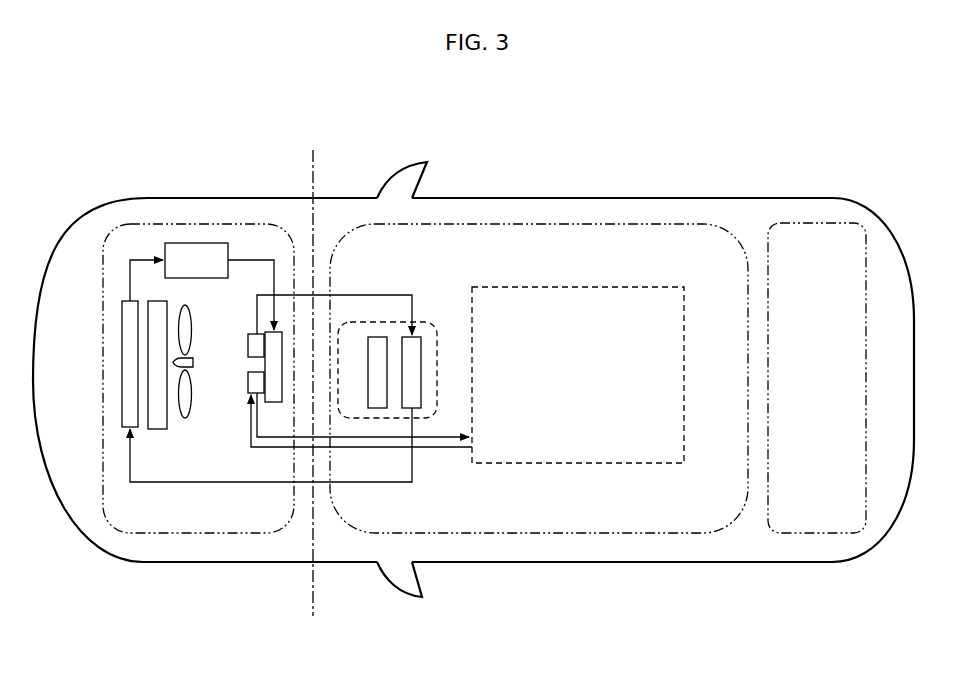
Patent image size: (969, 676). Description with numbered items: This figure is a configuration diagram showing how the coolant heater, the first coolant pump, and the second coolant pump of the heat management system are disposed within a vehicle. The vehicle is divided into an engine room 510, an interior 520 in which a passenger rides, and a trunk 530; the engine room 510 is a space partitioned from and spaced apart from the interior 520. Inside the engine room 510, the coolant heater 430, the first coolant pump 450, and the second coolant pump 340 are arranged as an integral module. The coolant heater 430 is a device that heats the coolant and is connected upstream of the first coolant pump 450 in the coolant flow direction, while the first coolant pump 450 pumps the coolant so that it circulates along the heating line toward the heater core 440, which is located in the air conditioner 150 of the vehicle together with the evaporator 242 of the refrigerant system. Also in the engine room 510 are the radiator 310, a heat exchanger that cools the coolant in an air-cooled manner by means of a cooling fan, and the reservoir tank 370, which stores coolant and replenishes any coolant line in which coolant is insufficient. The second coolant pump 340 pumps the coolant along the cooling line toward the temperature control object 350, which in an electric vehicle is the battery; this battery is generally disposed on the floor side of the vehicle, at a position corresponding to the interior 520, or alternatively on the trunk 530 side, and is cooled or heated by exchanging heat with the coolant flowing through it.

The air conditioner 150 is at (353, 322).
The evaporator 242 is at (372, 337).
The radiator 310 is at (122, 301).
The second coolant pump 340 is at (248, 390).
The temperature control object 350 is at (577, 287).
The reservoir tank 370 is at (187, 243).
The coolant heater 430 is at (283, 332).
The heater core 440 is at (421, 337).
The first coolant pump 450 is at (248, 334).
The engine room 510 is at (172, 533).
The interior 520 is at (592, 533).
The trunk 530 is at (827, 533).